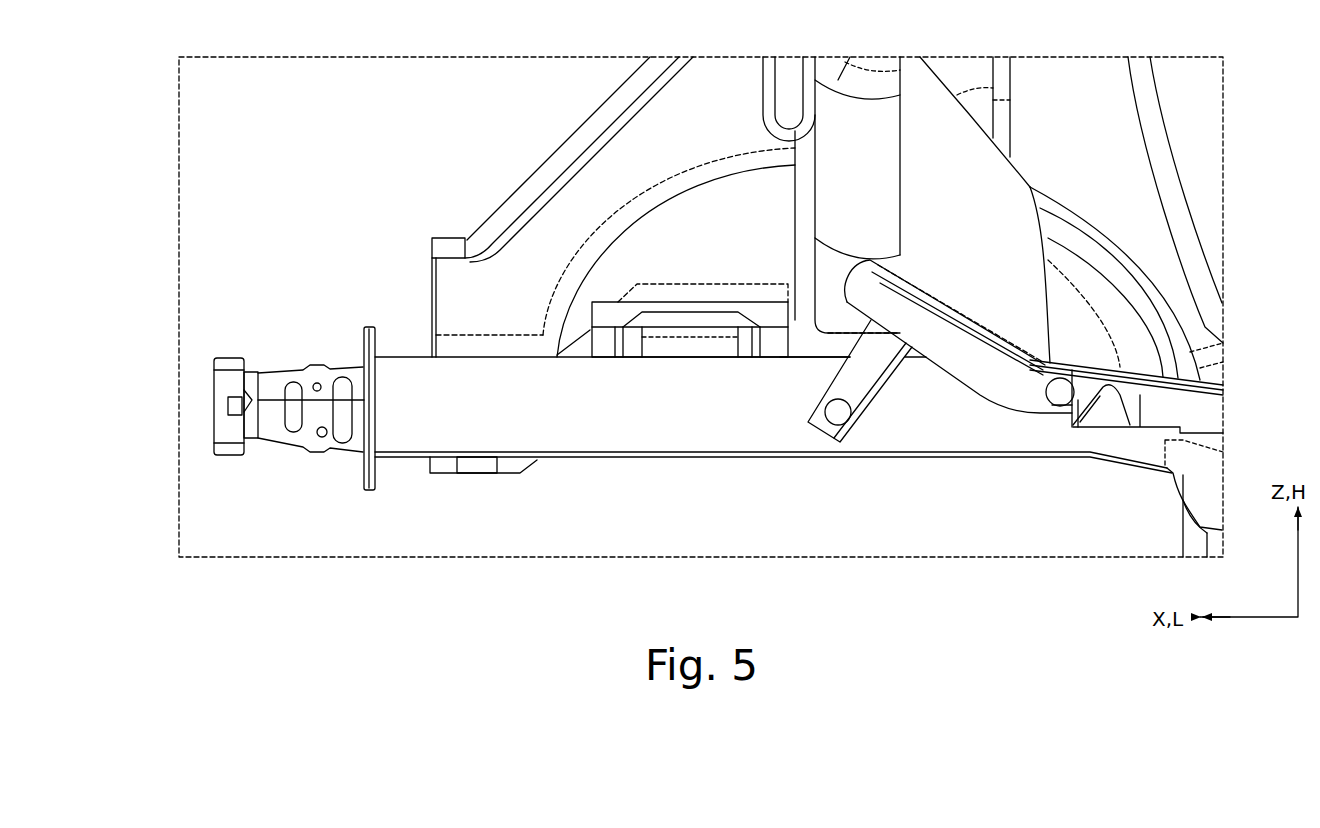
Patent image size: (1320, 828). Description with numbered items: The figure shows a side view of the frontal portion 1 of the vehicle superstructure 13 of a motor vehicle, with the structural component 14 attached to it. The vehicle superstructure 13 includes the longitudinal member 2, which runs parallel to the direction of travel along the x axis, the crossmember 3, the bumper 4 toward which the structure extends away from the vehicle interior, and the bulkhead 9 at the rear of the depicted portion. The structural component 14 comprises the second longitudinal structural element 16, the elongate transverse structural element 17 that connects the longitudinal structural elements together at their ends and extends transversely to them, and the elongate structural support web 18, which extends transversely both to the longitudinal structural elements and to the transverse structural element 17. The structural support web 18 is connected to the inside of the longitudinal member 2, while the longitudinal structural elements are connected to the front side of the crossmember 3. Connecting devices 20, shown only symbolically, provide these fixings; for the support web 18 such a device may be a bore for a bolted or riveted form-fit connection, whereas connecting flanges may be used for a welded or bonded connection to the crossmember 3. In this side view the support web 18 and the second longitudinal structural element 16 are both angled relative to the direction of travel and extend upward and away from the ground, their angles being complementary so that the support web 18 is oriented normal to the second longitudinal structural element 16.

The frontal portion 1 is at (333, 161).
The longitudinal member 2 is at (598, 420).
The crossmember 3 is at (1100, 400).
The bumper 4 is at (213, 386).
The bulkhead 9 is at (980, 245).
The vehicle superstructure 13 is at (622, 473).
The structural component 14 is at (798, 387).
The second longitudinal structural element 16 is at (990, 378).
The transverse structural element 17 is at (848, 288).
The structural support web 18 is at (862, 390).
The connecting devices 20 is at (845, 405).